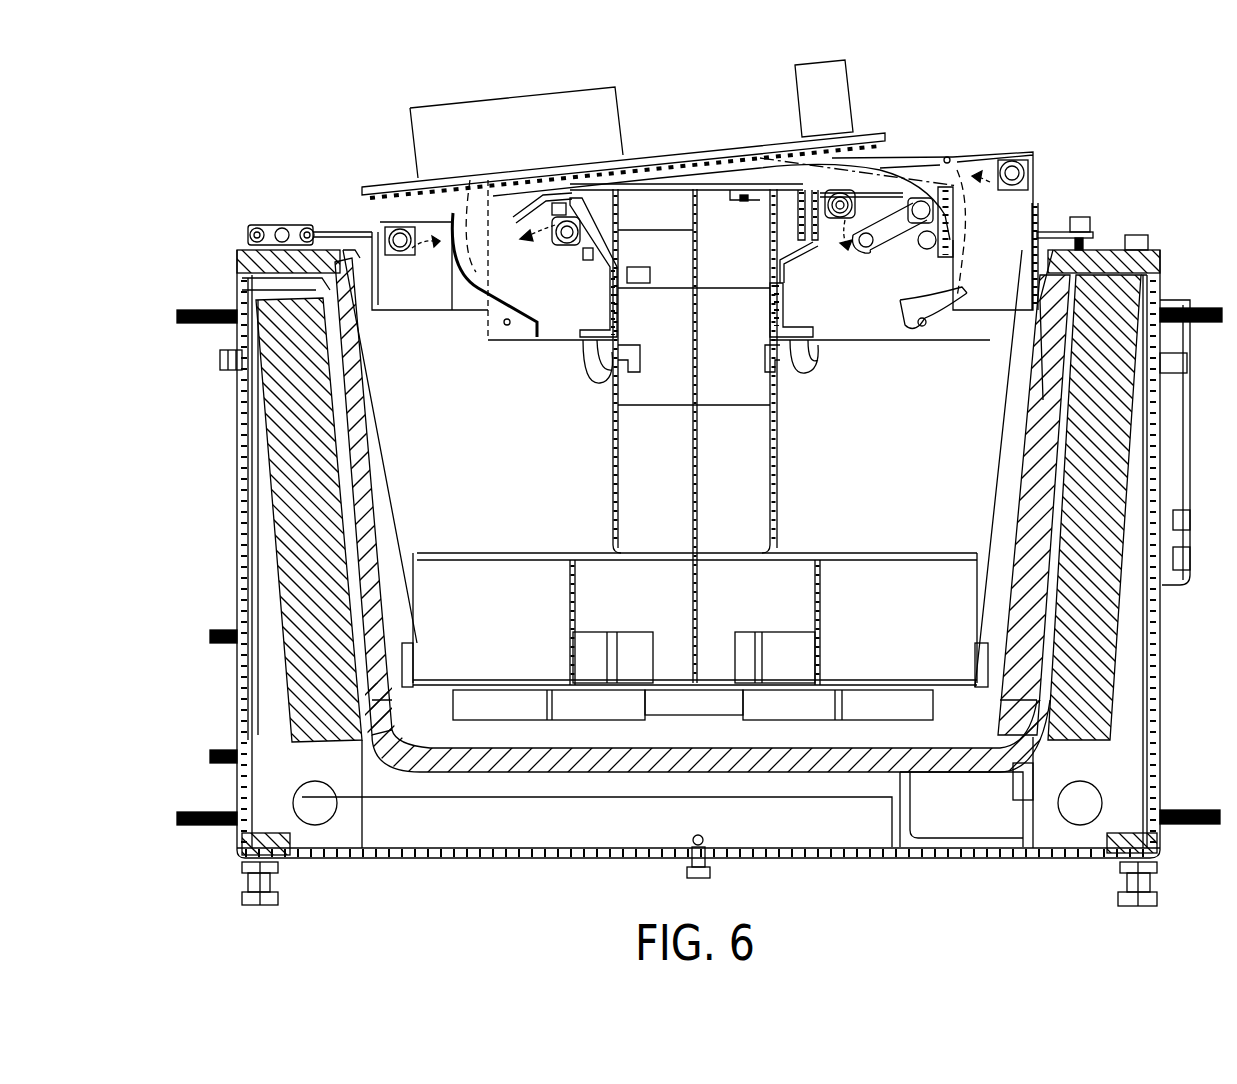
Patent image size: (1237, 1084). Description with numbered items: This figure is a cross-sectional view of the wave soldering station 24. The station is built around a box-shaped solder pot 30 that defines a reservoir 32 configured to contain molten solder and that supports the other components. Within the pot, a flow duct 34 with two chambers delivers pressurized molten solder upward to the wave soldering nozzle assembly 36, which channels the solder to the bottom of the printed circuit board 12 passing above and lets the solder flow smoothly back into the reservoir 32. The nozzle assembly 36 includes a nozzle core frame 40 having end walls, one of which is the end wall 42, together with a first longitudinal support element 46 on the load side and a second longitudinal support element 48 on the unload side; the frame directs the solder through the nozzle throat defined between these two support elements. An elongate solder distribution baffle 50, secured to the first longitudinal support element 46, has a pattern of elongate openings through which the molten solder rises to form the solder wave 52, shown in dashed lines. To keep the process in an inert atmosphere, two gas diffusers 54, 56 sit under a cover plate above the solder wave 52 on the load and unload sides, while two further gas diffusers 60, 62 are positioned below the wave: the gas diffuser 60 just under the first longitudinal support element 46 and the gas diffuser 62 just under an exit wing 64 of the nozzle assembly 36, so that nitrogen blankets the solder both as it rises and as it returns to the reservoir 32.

The printed circuit board 12 is at (385, 182).
The wave soldering station 24 is at (1100, 113).
The solder pot 30 is at (237, 472).
The reservoir 32 is at (1012, 680).
The flow duct 34 is at (777, 467).
The wave soldering nozzle assembly 36 is at (726, 172).
The nozzle core frame 40 is at (487, 338).
The end wall 42 is at (940, 137).
The first longitudinal support element 46 is at (562, 203).
The second longitudinal support element 48 is at (800, 265).
The solder distribution baffle 50 is at (628, 178).
The solder wave 52 is at (462, 215).
The gas diffuser 54 is at (383, 225).
The gas diffuser 56 is at (1025, 173).
The gas diffuser 60 is at (567, 257).
The gas diffuser 62 is at (873, 192).
The exit wing 64 is at (930, 156).